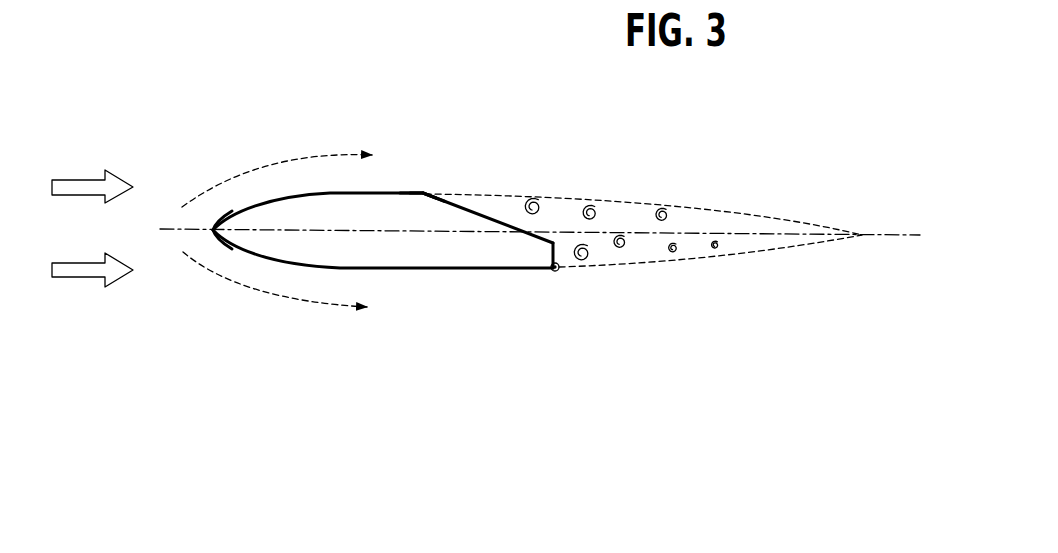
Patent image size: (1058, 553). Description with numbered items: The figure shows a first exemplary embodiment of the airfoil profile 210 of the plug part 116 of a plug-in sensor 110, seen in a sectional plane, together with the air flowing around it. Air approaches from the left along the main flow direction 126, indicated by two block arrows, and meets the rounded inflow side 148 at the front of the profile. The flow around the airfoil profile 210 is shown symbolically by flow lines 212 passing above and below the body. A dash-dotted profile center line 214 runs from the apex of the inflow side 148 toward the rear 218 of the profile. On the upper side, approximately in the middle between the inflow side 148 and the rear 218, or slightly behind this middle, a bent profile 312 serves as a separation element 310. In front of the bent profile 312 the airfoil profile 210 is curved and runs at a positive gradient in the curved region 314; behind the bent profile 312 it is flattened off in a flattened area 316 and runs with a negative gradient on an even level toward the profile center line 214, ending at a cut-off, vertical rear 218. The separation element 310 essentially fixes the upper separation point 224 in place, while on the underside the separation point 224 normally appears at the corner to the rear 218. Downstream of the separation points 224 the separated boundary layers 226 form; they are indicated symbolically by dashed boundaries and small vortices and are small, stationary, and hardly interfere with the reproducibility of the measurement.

The plug-in sensor 110 is at (378, 190).
The plug part 116 is at (378, 190).
The main flow direction 126 is at (80, 187).
The inflow side 148 is at (208, 225).
The airfoil profile 210 is at (378, 190).
The flow lines 212 is at (248, 170).
The profile center line 214 is at (428, 233).
The rear 218 is at (560, 263).
The separation points 224 is at (430, 190).
The separated boundary layers 226 is at (723, 210).
The separation element 310 is at (422, 189).
The bent profile 312 is at (450, 142).
The curved region 314 is at (308, 189).
The flattened area 316 is at (492, 209).